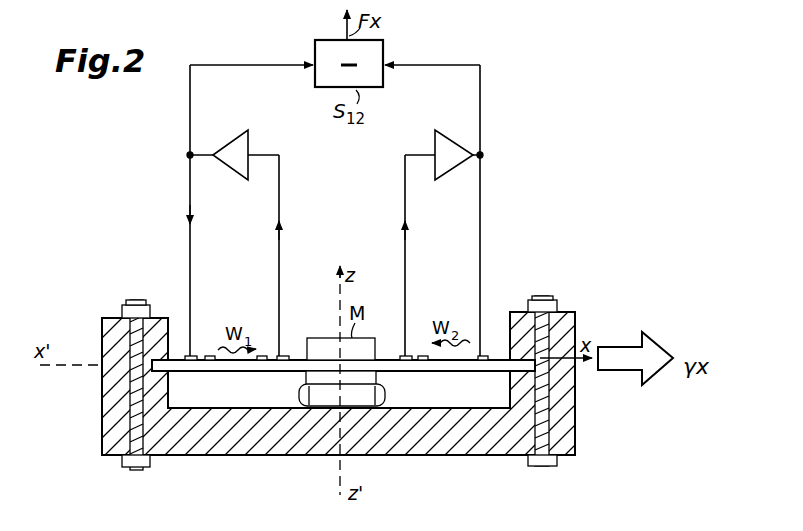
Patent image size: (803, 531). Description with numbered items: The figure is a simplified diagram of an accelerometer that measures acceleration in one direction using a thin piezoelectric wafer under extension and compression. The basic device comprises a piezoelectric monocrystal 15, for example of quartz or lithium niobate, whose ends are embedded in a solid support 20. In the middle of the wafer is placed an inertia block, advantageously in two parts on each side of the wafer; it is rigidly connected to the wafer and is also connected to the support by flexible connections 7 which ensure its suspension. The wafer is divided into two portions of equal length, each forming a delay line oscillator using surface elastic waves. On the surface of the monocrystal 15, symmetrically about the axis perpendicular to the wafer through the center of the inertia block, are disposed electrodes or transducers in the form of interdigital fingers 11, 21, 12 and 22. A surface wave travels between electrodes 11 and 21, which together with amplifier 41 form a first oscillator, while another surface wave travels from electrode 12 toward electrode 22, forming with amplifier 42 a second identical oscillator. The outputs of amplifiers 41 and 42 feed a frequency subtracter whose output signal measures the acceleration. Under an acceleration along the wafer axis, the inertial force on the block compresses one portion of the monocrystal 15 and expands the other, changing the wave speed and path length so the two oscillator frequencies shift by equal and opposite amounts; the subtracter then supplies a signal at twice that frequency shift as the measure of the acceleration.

The flexible connections 7 is at (305, 402).
The electrode 11 is at (200, 356).
The electrode 12 is at (486, 356).
The piezoelectric monocrystal 15 is at (538, 367).
The solid support 20 is at (102, 434).
The electrode 21 is at (284, 356).
The electrode 22 is at (402, 356).
The amplifier 41 is at (234, 146).
The amplifier 42 is at (458, 146).